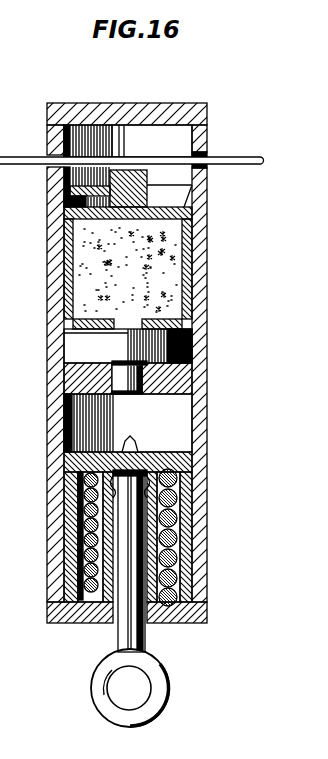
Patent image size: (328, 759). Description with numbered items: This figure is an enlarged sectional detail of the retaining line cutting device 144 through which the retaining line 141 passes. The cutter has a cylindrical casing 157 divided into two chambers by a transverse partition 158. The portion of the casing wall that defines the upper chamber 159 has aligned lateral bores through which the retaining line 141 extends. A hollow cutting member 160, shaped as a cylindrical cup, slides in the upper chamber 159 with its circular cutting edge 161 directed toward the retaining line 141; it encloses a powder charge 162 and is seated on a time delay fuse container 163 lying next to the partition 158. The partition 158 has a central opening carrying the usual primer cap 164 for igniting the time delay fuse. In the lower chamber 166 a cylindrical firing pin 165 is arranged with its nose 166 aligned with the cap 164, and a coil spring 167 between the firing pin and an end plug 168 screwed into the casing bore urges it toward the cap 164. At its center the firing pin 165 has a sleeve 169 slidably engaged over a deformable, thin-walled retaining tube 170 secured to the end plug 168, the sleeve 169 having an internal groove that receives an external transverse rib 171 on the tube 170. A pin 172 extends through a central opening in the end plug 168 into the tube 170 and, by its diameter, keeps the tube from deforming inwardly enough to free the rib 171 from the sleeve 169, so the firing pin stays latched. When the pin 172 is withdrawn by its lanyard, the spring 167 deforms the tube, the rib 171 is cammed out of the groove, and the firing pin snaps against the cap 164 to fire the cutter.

The retaining line 141 is at (231, 158).
The retaining line cutting device 144 is at (201, 100).
The cylindrical casing 157 is at (98, 103).
The transverse partition 158 is at (97, 388).
The upper chamber 159 is at (97, 143).
The hollow cutting member 160 is at (68, 266).
The circular cutting edge 161 is at (190, 185).
The powder charge 162 is at (90, 280).
The time delay fuse container 163 is at (78, 345).
The primer cap 164 is at (140, 393).
The cylindrical firing pin 165 is at (153, 452).
The lower chamber 166 is at (131, 447).
The coil spring 167 is at (77, 532).
The end plug 168 is at (94, 623).
The sleeve 169 is at (153, 568).
The retaining tube 170 is at (145, 538).
The external transverse rib 171 is at (183, 486).
The pin 172 is at (146, 640).